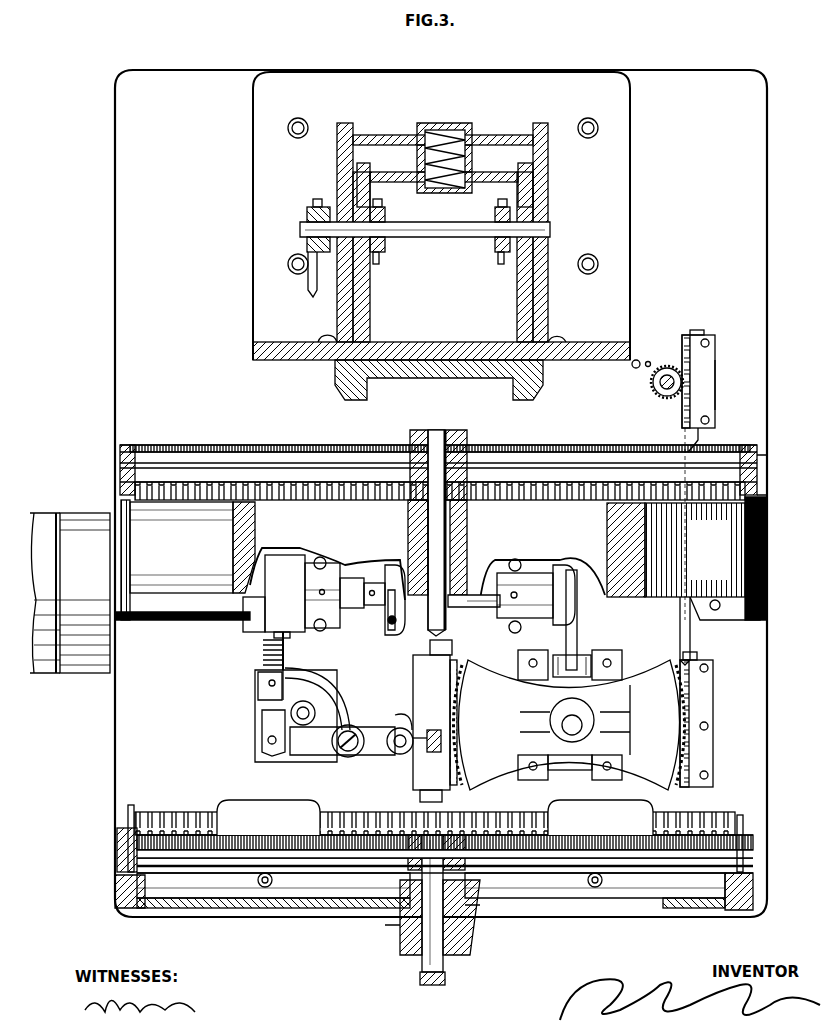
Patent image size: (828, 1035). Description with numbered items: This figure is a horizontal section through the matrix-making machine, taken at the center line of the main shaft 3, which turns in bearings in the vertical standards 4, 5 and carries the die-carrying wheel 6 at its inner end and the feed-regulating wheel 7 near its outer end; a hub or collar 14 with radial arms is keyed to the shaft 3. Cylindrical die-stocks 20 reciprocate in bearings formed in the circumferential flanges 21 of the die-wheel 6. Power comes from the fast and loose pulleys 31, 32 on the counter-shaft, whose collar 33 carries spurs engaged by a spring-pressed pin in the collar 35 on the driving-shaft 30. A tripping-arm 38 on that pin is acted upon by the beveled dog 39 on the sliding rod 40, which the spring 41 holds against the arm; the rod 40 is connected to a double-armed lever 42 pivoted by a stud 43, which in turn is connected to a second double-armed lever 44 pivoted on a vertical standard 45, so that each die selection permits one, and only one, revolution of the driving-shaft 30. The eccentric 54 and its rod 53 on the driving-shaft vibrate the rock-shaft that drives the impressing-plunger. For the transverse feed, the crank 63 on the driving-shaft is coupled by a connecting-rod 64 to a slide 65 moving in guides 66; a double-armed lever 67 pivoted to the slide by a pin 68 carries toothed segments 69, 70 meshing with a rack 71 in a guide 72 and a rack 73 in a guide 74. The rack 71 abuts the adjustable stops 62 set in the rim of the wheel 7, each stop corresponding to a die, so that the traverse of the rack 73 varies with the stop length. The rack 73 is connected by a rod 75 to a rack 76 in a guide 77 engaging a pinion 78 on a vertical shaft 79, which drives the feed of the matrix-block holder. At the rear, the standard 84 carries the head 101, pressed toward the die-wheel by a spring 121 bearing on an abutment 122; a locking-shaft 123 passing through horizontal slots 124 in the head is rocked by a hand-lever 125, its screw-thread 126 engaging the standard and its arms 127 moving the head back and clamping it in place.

The main shaft 3 is at (437, 701).
The vertical standard 4 is at (420, 892).
The vertical standard 5 is at (441, 558).
The die-carrying wheel 6 is at (438, 463).
The feed-regulating wheel 7 is at (435, 869).
The hub or collar 14 is at (465, 928).
The die-stocks 20 is at (522, 497).
The circumferential flanges 21 is at (120, 450).
The driving-shaft 30 is at (420, 596).
The fast pulley 31 is at (83, 593).
The loose pulley 32 is at (45, 602).
The counter-shaft collar 33 is at (254, 614).
The driving-shaft collar 35 is at (302, 593).
The tripping-arm 38 is at (290, 638).
The dog or pawl 39 is at (263, 642).
The horizontal rod or bar 40 is at (258, 668).
The spring 41 is at (285, 662).
The double-armed lever 42 is at (359, 741).
The stud 43 is at (335, 758).
The double-armed lever 44 is at (429, 729).
The vertical standard 45 is at (398, 710).
The eccentric-rod 53 is at (405, 603).
The eccentric or crank 54 is at (388, 630).
The stops or projections 62 is at (434, 834).
The crank 63 is at (536, 596).
The connecting-rod 64 is at (577, 623).
The block or slide 65 is at (570, 759).
The guides 66 is at (572, 724).
The double-armed lever 67 is at (568, 725).
The pin 68 is at (572, 720).
The toothed segment 69 is at (475, 732).
The toothed segment 70 is at (667, 713).
The rack 71 is at (445, 648).
The guide 72 is at (422, 728).
The rack 73 is at (700, 660).
The guide 74 is at (709, 723).
The rod or bar 75 is at (678, 630).
The rack 76 is at (701, 475).
The guide 77 is at (727, 386).
The pinion 78 is at (665, 372).
The vertical shaft 79 is at (660, 393).
The vertical frame or standard 84 is at (443, 230).
The head 101 is at (530, 316).
The spring 121 is at (416, 134).
The abutment 122 is at (444, 148).
The locking-shaft 123 is at (445, 211).
The horizontal slots 124 is at (548, 216).
The hand-lever 125 is at (306, 288).
The screw-thread 126 is at (307, 243).
The arms 127 is at (440, 231).